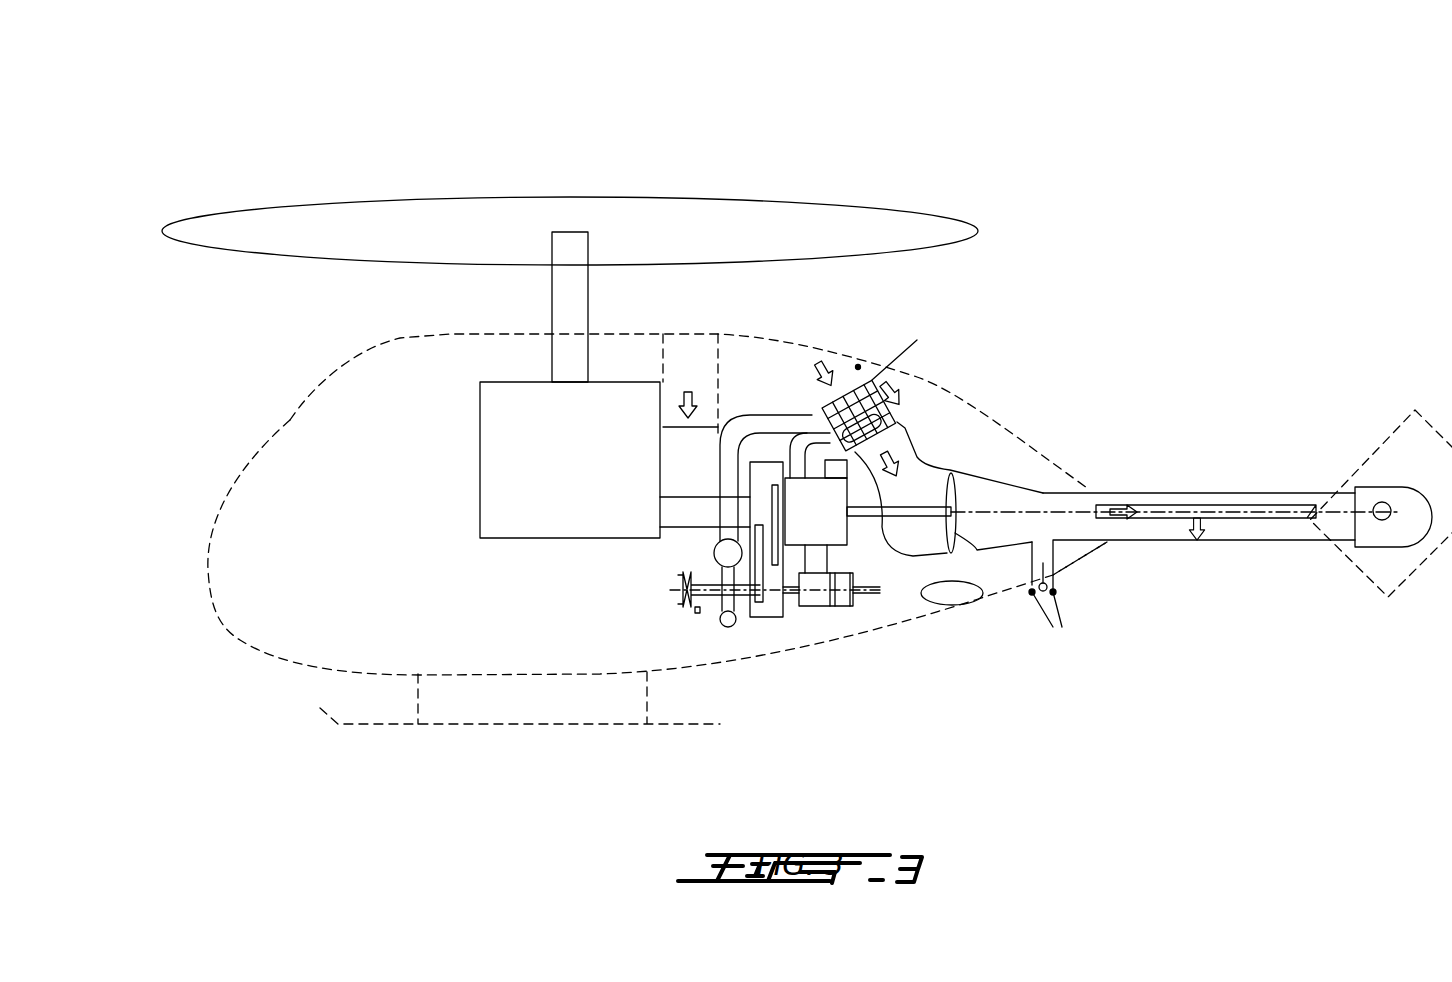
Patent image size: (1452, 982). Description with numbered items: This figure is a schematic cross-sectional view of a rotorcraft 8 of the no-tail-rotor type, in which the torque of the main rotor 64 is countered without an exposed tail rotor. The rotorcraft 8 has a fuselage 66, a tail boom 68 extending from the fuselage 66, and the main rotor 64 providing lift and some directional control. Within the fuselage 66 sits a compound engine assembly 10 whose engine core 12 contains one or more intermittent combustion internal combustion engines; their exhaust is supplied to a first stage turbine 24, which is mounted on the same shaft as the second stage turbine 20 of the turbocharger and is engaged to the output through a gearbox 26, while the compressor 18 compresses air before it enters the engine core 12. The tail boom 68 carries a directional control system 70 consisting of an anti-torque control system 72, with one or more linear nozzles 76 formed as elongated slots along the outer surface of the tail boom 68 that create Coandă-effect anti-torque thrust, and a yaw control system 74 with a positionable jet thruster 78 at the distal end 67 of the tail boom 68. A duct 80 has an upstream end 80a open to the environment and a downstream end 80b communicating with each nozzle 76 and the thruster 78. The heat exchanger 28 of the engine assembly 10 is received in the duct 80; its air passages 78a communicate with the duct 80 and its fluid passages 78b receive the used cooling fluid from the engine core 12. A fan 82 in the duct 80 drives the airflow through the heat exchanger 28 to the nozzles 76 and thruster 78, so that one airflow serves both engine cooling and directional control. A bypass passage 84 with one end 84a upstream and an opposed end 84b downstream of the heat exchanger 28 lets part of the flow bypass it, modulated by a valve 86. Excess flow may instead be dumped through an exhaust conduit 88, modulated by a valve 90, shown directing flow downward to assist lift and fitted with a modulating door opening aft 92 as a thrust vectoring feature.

The rotorcraft 8 is at (200, 420).
The compound engine assembly 10 is at (777, 635).
The engine core 12 is at (826, 523).
The compressor 18 is at (720, 597).
The second stage turbine 20 is at (848, 607).
The first stage turbine 24 is at (833, 607).
The gearbox 26 is at (763, 612).
The heat exchanger 28 is at (810, 396).
The main rotor 64 is at (430, 197).
The fuselage 66 is at (265, 660).
The distal end 67 is at (1362, 500).
The tail boom 68 is at (1222, 478).
The directional control system 70 is at (1390, 657).
The anti-torque control system 72 is at (1157, 495).
The yaw control system 74 is at (1382, 495).
The nozzle 76 is at (1123, 504).
The jet thruster 78 is at (1378, 528).
The air passages 78a is at (822, 412).
The fluid passages 78b is at (872, 380).
The duct 80 is at (978, 497).
The upstream end 80a is at (803, 357).
The downstream end 80b is at (1200, 503).
The fan 82 is at (977, 550).
The bypass passage 84 is at (903, 413).
The end 84a is at (843, 367).
The opposed end 84b is at (947, 553).
The valve 86 is at (858, 367).
The exhaust conduit 88 is at (1042, 553).
The valve 90 is at (1053, 575).
The modulating door opening aft 92 is at (1038, 620).